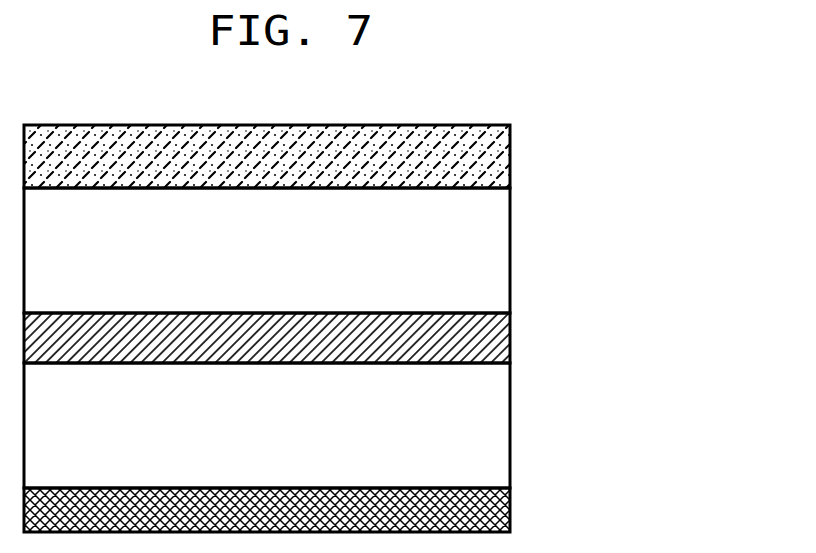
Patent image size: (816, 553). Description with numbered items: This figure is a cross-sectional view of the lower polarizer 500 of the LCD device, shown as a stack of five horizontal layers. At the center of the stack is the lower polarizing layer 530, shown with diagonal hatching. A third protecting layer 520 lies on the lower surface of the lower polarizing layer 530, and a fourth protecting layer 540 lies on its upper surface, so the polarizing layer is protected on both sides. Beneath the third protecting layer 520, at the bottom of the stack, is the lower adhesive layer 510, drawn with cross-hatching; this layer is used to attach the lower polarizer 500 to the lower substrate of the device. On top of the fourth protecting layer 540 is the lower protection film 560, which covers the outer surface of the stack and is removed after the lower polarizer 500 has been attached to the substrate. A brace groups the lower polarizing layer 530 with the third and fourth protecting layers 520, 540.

The lower polarizer 500 is at (692, 239).
The lower adhesive layer 510 is at (494, 507).
The third protecting layer 520 is at (488, 429).
The lower polarizing layer 530 is at (492, 339).
The fourth protecting layer 540 is at (488, 256).
The lower protection film 560 is at (488, 164).